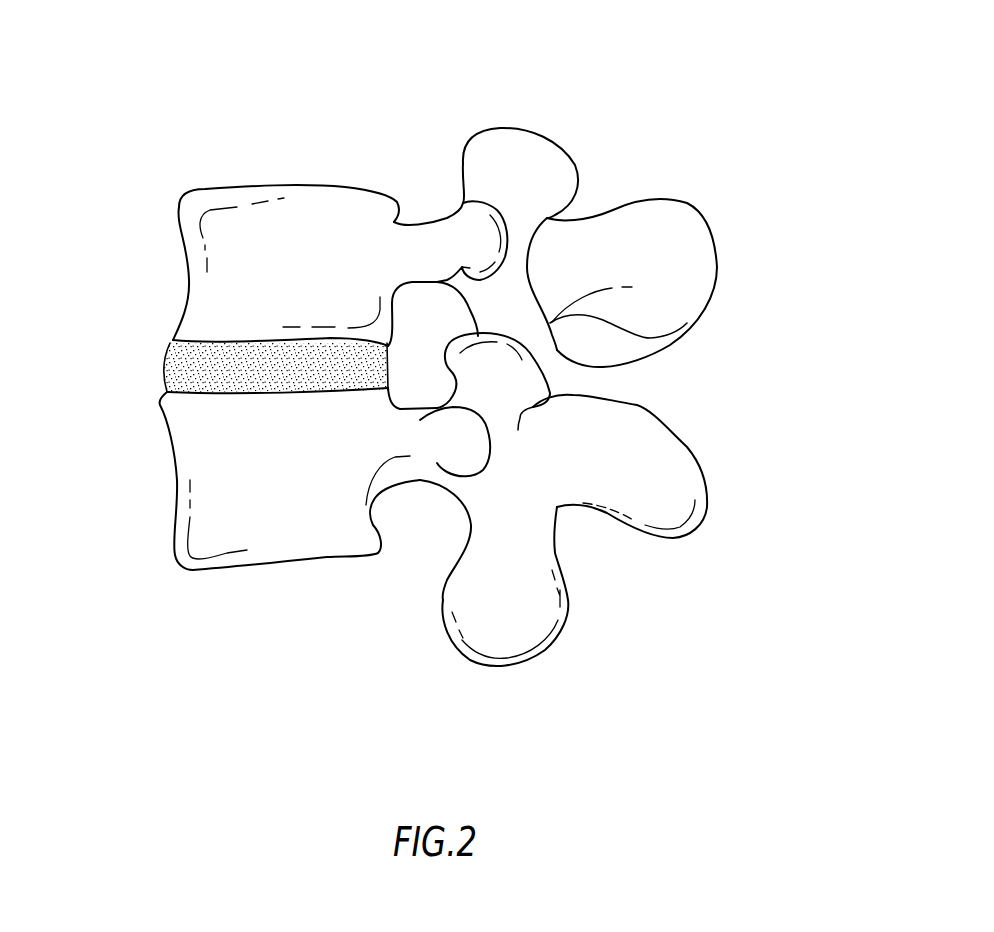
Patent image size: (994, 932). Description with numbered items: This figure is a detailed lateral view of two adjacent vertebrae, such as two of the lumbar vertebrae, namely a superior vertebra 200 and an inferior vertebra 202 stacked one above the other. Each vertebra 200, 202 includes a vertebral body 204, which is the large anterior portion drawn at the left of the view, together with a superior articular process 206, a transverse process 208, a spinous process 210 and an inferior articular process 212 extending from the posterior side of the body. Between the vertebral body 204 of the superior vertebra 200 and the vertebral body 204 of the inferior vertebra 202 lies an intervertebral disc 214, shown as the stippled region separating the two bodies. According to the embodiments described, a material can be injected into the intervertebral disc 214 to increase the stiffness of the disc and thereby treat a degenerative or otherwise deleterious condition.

The superior vertebra 200 is at (702, 195).
The inferior vertebra 202 is at (698, 553).
The vertebral body 204 is at (235, 233).
The superior articular process 206 is at (500, 157).
The transverse process 208 is at (473, 240).
The spinous process 210 is at (690, 258).
The inferior articular process 212 is at (553, 353).
The intervertebral disc 214 is at (193, 373).